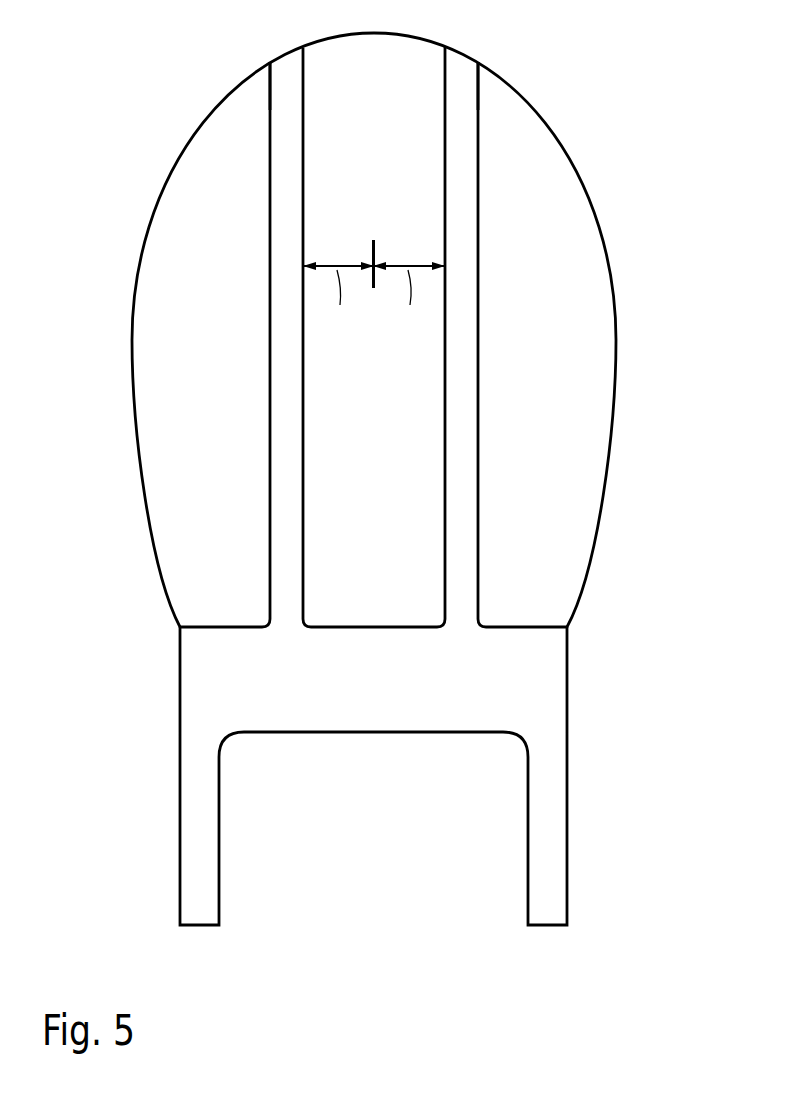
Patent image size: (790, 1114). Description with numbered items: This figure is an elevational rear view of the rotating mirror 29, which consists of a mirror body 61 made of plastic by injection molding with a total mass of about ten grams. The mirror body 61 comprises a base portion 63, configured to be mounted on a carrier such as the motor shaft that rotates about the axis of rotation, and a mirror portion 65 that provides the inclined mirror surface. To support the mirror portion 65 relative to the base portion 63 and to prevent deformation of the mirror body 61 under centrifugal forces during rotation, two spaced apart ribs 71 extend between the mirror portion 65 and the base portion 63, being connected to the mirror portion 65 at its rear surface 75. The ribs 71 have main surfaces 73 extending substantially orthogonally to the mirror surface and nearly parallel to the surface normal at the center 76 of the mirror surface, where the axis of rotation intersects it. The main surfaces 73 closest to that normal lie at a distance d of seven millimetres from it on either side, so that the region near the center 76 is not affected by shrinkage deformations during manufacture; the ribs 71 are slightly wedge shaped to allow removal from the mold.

The rotating mirror 29 is at (662, 120).
The mirror body 61 is at (663, 401).
The base portion 63 is at (568, 825).
The mirror portion 65 is at (614, 298).
The ribs 71 is at (268, 108).
The main surfaces 73 is at (268, 353).
The rear surface 75 is at (232, 245).
The center 76 is at (383, 252).